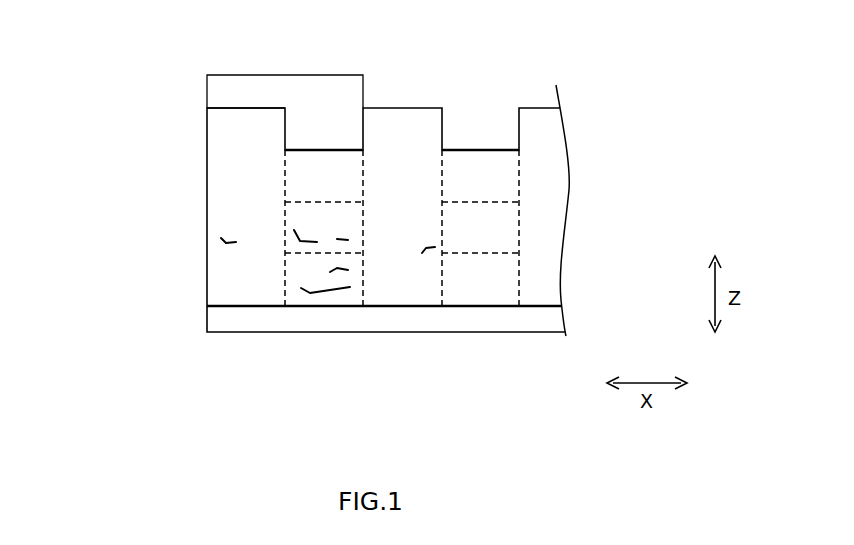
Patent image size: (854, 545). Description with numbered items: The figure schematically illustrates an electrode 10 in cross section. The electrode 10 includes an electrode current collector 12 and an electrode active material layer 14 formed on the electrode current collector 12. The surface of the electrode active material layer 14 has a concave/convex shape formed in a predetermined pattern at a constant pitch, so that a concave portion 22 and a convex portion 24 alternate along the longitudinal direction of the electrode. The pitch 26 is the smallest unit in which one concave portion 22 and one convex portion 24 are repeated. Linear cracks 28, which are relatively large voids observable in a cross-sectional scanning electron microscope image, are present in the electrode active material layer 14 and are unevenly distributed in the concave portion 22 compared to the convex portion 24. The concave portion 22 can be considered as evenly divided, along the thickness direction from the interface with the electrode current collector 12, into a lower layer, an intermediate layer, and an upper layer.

The electrode 10 is at (80, 22).
The electrode current collector 12 is at (208, 315).
The electrode active material layer 14 is at (212, 186).
The concave portion 22 is at (327, 150).
The convex portion 24 is at (210, 108).
The pitch 26 is at (285, 77).
The linear cracks 28 is at (336, 292).